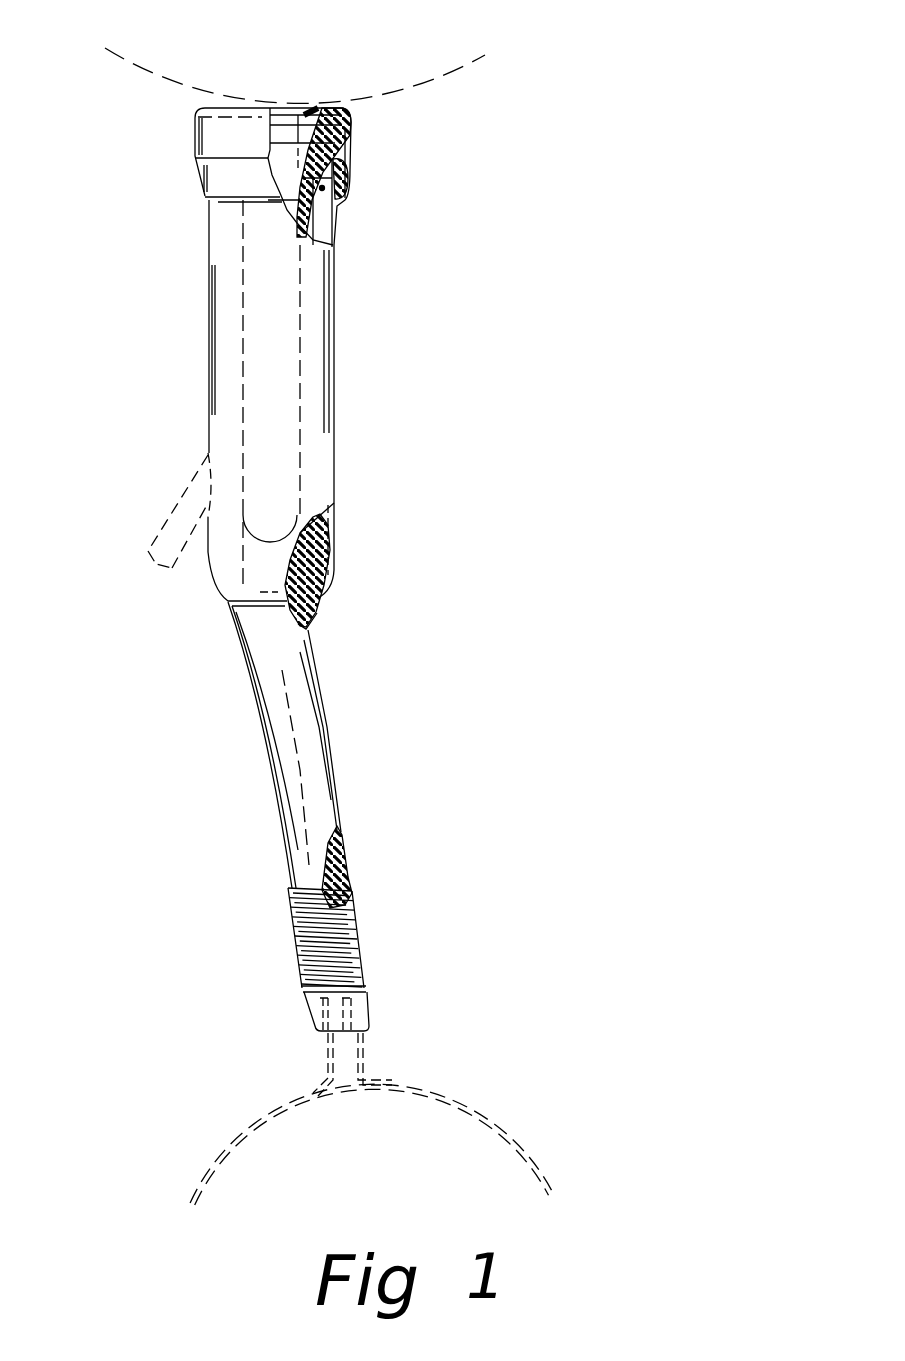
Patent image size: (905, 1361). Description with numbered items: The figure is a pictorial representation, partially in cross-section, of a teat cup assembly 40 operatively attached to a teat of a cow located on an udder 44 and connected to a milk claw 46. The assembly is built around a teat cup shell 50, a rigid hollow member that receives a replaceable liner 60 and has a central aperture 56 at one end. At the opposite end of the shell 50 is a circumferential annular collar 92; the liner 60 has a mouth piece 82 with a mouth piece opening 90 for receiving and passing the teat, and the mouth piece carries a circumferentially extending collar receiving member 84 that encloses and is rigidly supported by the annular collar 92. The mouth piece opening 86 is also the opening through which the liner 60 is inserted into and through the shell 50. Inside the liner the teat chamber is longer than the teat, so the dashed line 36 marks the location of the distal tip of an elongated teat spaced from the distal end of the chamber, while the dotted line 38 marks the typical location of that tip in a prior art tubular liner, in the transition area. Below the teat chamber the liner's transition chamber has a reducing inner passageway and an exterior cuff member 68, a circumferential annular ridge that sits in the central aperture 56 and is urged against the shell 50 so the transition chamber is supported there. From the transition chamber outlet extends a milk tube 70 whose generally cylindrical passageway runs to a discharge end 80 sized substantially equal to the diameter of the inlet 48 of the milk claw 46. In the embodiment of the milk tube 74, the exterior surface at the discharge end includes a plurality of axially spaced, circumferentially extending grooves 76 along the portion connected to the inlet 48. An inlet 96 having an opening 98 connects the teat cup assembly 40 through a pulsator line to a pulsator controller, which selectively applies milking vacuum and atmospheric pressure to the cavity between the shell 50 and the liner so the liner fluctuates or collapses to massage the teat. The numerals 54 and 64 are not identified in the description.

The dashed line 36 is at (312, 455).
The dotted line 38 is at (233, 575).
The teat cup assembly 40 is at (500, 345).
The udder 44 is at (443, 75).
The milk claw 46 is at (470, 1105).
The inlet of milk claw 48 is at (365, 1057).
The teat cup shell 50 is at (333, 223).
The top seal 54 is at (315, 107).
The central aperture 56 is at (230, 603).
The liner 60 is at (340, 185).
The seal member 64 is at (323, 583).
The cuff member 68 is at (313, 613).
The milk tube 70 is at (283, 753).
The milk tube 74 is at (370, 874).
The circumferentially extending grooves 76 is at (292, 948).
The discharge end 80 is at (327, 1034).
The mouth piece 82 is at (350, 130).
The collar receiving member 84 is at (343, 193).
The mouth piece opening 86 is at (337, 163).
The mouth piece opening 90 is at (245, 104).
The annular collar 92 is at (313, 602).
The inlet 96 is at (192, 482).
The opening 98 is at (157, 563).